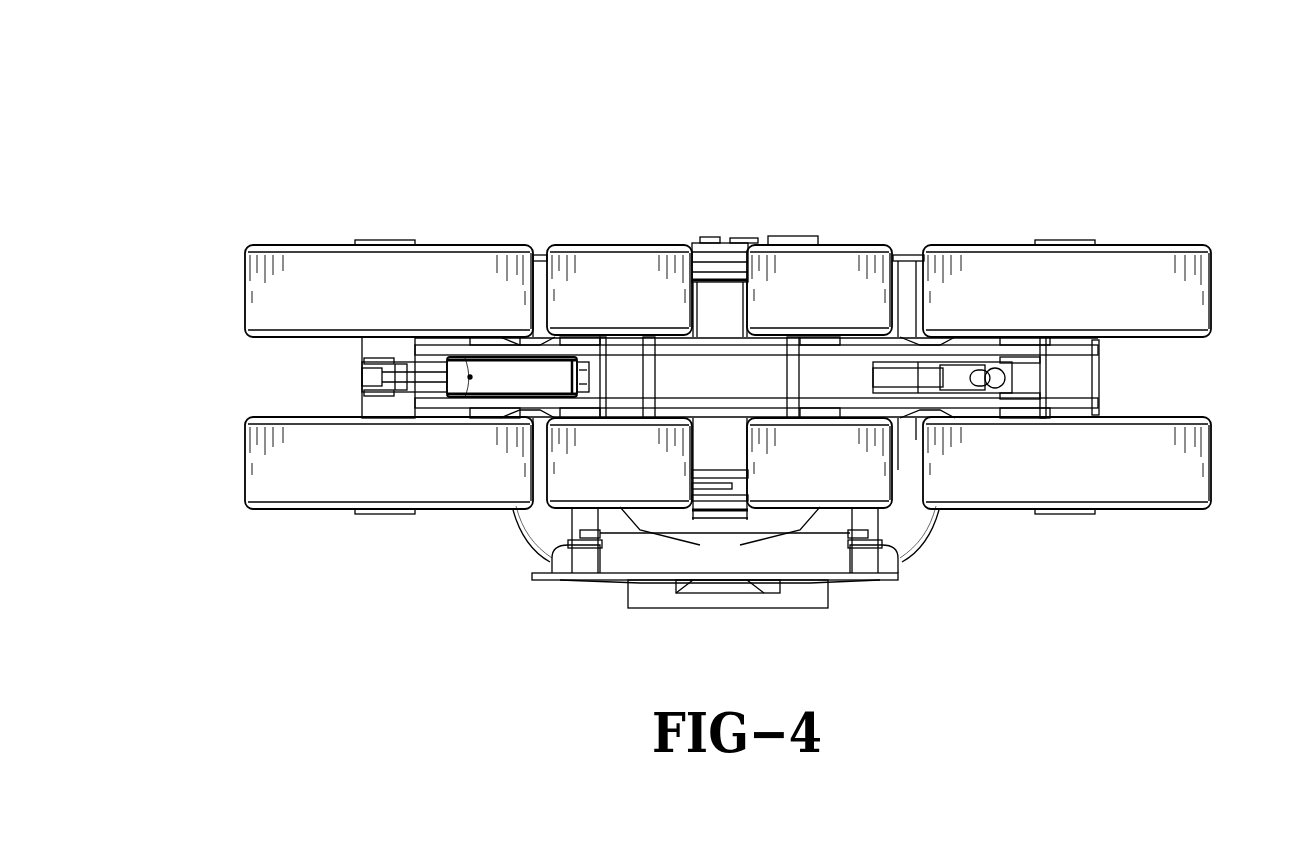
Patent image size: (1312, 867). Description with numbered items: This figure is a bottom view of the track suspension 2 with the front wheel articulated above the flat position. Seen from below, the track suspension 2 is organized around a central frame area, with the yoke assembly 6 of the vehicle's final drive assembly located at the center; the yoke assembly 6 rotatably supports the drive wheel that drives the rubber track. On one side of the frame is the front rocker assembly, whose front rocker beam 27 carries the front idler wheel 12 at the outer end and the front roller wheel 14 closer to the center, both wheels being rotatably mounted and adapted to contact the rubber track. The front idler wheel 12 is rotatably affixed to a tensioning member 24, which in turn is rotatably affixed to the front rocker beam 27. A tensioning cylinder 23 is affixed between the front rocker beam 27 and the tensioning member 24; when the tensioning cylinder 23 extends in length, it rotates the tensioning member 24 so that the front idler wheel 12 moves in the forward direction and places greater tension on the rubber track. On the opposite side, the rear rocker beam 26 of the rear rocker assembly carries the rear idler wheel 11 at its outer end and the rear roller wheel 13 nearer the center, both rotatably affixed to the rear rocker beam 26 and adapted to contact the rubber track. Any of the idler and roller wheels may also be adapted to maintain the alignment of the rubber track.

The track suspension 2 is at (690, 153).
The yoke assembly 6 is at (550, 525).
The rear idler wheel 11 is at (1165, 295).
The front idler wheel 12 is at (273, 295).
The rear roller wheel 13 is at (818, 278).
The front roller wheel 14 is at (626, 278).
The tensioning cylinder 23 is at (414, 377).
The tensioning member 24 is at (372, 406).
The rear rocker beam 26 is at (1100, 395).
The front rocker beam 27 is at (495, 355).